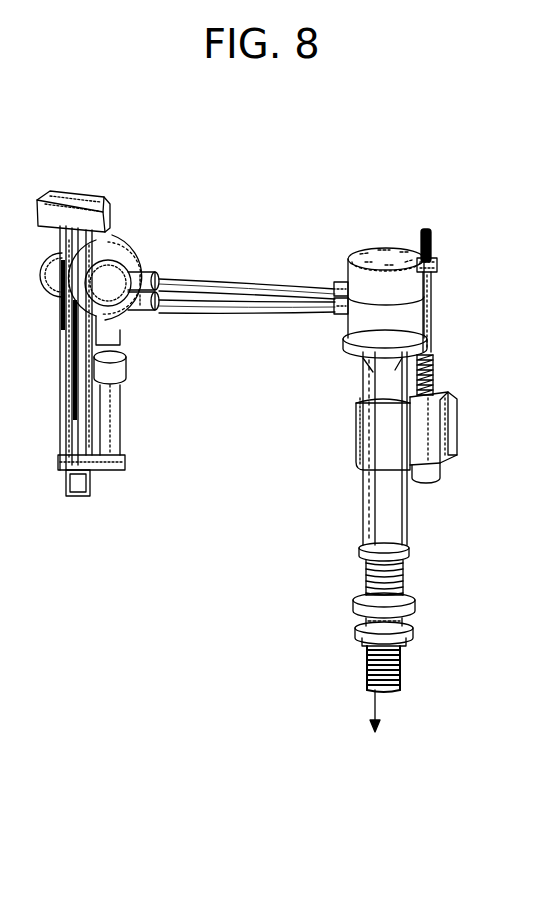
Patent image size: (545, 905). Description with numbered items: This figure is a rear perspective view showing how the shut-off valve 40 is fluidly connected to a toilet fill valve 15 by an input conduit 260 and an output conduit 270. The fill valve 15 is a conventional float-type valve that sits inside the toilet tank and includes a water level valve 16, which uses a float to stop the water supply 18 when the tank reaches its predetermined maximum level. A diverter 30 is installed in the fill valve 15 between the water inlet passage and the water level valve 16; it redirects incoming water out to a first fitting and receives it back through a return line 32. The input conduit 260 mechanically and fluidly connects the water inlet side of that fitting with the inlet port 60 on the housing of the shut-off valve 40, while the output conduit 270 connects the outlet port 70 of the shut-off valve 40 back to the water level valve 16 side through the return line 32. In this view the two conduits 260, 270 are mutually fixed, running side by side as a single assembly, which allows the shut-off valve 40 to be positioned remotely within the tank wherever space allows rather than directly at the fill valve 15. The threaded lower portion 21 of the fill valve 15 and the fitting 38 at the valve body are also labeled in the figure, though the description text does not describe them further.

The shut-off valve 40 is at (131, 203).
The outlet port 70 is at (152, 268).
The inlet port 60 is at (140, 304).
The output conduit 270 is at (257, 290).
The input conduit 260 is at (250, 313).
The return line 32 is at (337, 283).
The lower fitting 38 is at (340, 320).
The diverter 30 is at (410, 330).
The water level valve 16 is at (432, 236).
The toilet fill valve 15 is at (342, 436).
The threaded shank 21 is at (395, 685).
The water supply 18 is at (375, 722).